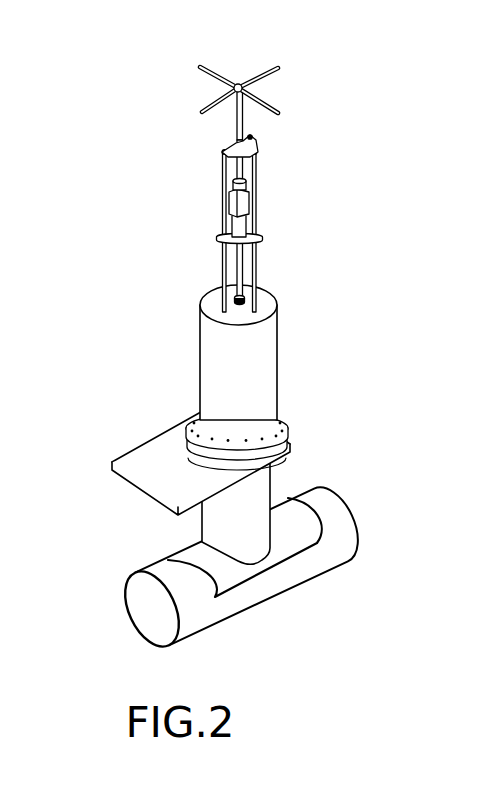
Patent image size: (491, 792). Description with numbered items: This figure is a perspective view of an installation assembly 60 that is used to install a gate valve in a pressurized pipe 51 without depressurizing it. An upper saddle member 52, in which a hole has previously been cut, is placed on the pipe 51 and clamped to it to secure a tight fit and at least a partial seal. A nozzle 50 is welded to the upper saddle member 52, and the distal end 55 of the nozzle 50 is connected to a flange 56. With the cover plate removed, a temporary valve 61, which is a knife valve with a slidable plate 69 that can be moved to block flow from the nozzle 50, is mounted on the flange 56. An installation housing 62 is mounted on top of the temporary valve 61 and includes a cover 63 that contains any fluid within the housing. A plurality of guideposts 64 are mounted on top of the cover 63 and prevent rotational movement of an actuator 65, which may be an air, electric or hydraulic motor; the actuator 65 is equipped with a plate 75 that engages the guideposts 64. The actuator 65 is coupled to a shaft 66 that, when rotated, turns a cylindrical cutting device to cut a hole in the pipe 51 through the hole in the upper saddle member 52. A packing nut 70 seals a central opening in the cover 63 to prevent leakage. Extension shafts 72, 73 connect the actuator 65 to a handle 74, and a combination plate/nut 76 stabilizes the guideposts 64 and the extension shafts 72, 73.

The nozzle 50 is at (194, 522).
The pipe 51 is at (163, 574).
The upper saddle member 52 is at (291, 548).
The distal end 55 is at (273, 475).
The flange 56 is at (283, 451).
The installation assembly 60 is at (300, 218).
The temporary valve 61 is at (170, 413).
The installation housing 62 is at (292, 336).
The cover 63 is at (210, 303).
The guideposts 64 is at (225, 168).
The actuator 65 is at (233, 205).
The shaft 66 is at (239, 268).
The slidable plate 69 is at (142, 460).
The packing nut 70 is at (248, 302).
The extension shaft 72 is at (240, 165).
The extension shaft 73 is at (238, 123).
The handle 74 is at (216, 74).
The plate 75 is at (236, 243).
The combination plate/nut 76 is at (254, 136).